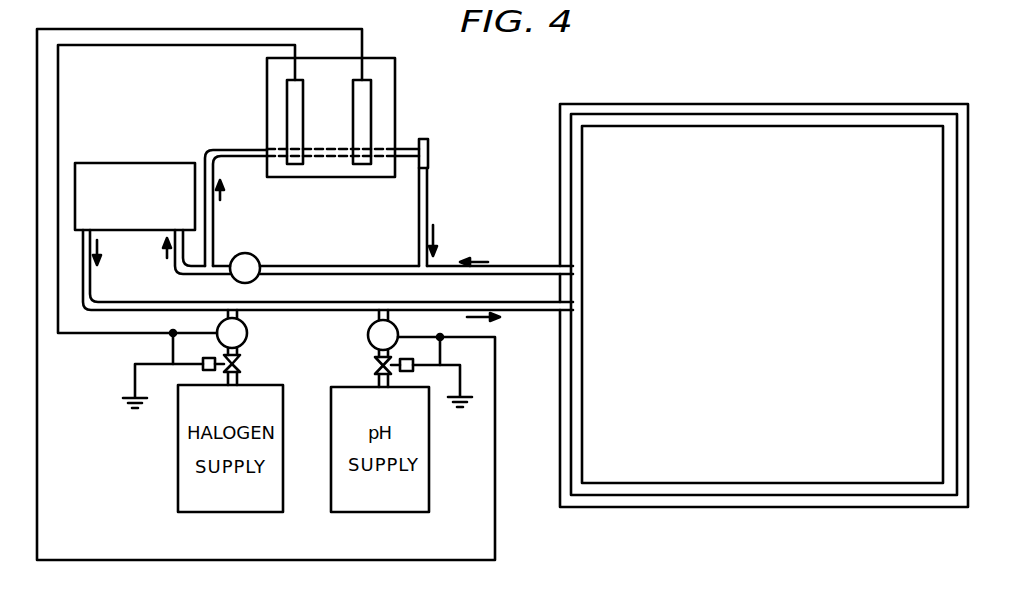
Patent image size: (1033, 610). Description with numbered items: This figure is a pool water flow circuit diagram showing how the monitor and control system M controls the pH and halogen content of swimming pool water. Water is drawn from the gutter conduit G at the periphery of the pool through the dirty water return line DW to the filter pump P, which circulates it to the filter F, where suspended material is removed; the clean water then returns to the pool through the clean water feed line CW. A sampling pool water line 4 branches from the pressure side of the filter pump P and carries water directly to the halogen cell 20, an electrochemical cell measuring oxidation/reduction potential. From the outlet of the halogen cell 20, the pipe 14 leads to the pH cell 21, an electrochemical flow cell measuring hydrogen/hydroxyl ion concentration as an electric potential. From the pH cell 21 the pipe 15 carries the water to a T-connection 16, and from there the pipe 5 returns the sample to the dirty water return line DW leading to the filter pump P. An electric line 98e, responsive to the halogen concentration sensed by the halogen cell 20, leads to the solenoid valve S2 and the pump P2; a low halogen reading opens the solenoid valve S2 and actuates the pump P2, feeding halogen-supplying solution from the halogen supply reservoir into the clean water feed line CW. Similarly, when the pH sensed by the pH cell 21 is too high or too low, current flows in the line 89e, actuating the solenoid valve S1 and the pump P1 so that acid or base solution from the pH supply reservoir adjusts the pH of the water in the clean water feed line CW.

The sampling pool water line 4 is at (218, 230).
The pipe 5 is at (430, 202).
The pipe 14 is at (325, 157).
The pipe 15 is at (408, 158).
The T-connection 16 is at (430, 152).
The halogen cell 20 is at (303, 103).
The pH cell 21 is at (353, 128).
The monitor and control system M is at (395, 118).
The filter F is at (126, 162).
The filter pump P is at (256, 262).
The pump P1 is at (368, 334).
The pump P2 is at (247, 330).
The solenoid valve S1 is at (375, 365).
The solenoid valve S2 is at (240, 362).
The gutter conduit G is at (561, 193).
The dirty water return line DW is at (527, 266).
The clean water feed line CW is at (525, 311).
The electric line 98e is at (115, 337).
The electric line 89e is at (283, 559).